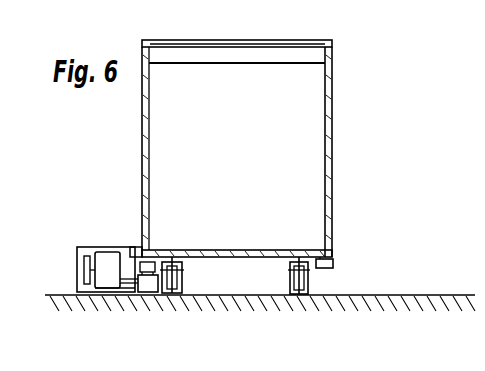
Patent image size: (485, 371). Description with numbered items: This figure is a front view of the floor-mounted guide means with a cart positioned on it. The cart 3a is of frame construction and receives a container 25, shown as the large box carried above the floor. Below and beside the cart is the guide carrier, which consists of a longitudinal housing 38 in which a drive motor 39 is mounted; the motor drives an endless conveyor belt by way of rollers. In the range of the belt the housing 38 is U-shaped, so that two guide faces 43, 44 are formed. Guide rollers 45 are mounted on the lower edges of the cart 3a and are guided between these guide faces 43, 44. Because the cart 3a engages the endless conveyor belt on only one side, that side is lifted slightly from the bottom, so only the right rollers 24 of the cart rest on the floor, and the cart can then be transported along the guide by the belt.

The container 25 is at (316, 95).
The cart 3a is at (331, 147).
The guide rollers 45 is at (333, 259).
The guide face 44 is at (133, 248).
The longitudinal housing 38 is at (76, 252).
The drive motor 39 is at (100, 275).
The guide face 43 is at (160, 291).
The right rollers 24 is at (297, 292).